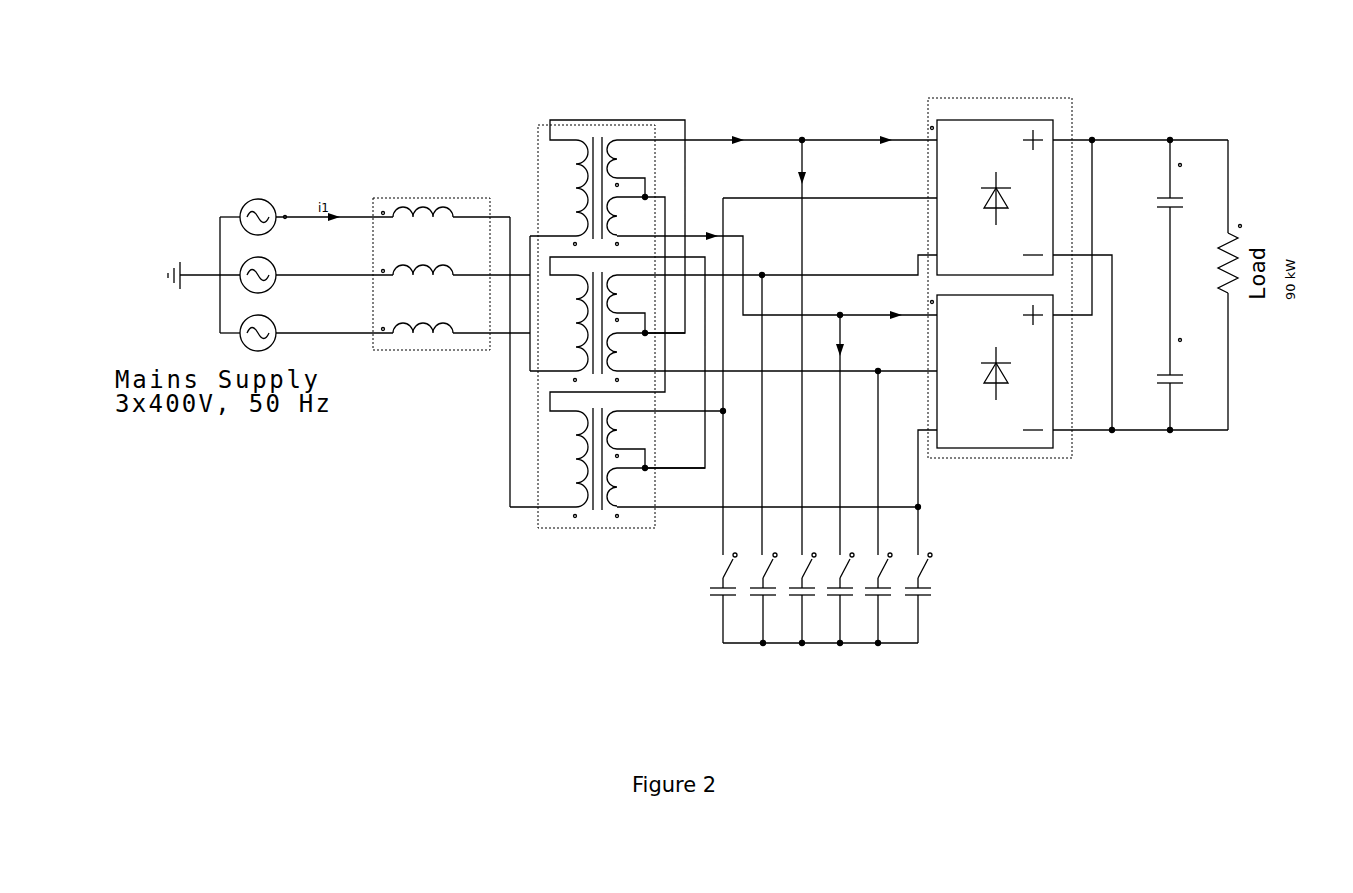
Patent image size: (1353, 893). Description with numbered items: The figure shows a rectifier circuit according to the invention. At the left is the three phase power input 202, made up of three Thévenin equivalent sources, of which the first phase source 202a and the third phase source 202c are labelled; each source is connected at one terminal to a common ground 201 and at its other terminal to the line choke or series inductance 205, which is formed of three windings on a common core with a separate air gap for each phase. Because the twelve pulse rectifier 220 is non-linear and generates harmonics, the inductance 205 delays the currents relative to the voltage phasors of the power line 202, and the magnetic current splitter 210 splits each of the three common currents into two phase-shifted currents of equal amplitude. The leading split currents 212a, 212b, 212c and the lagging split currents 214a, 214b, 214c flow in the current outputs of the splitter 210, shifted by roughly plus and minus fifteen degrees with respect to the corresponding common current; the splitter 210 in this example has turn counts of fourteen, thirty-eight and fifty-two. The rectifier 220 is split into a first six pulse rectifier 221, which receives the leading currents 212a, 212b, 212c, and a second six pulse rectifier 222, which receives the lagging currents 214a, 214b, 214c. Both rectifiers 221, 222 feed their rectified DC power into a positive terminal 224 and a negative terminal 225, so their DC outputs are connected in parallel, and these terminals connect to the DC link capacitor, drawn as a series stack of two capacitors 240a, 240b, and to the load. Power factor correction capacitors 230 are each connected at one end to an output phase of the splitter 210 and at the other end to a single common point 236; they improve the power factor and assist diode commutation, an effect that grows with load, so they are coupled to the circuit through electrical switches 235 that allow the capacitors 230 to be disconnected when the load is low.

The ground 201 is at (171, 288).
The three phase power input 202 is at (243, 261).
The Thévenin equivalent 202a is at (257, 198).
The Thévenin equivalent 202c is at (281, 344).
The line choke or series inductance 205 is at (436, 356).
The magnetic current splitter 210 is at (538, 119).
The first split current 212a is at (777, 127).
The leading split current 212b is at (777, 347).
The leading split current 212c is at (777, 402).
The second split current 214a is at (777, 389).
The lagging split current 214b is at (777, 451).
The lagging split current 214c is at (777, 481).
The twelve pulse rectifier 220 is at (1039, 268).
The six pulse rectifier 221 is at (967, 117).
The six pulse rectifier 222 is at (1062, 439).
The positive terminal 224 is at (1131, 138).
The negative terminal 225 is at (1114, 331).
The power factor correction capacitors 230 is at (871, 635).
The electrical switch 235 is at (940, 564).
The single common point 236 is at (790, 646).
The capacitor 240a is at (1192, 197).
The capacitor 240b is at (1194, 383).